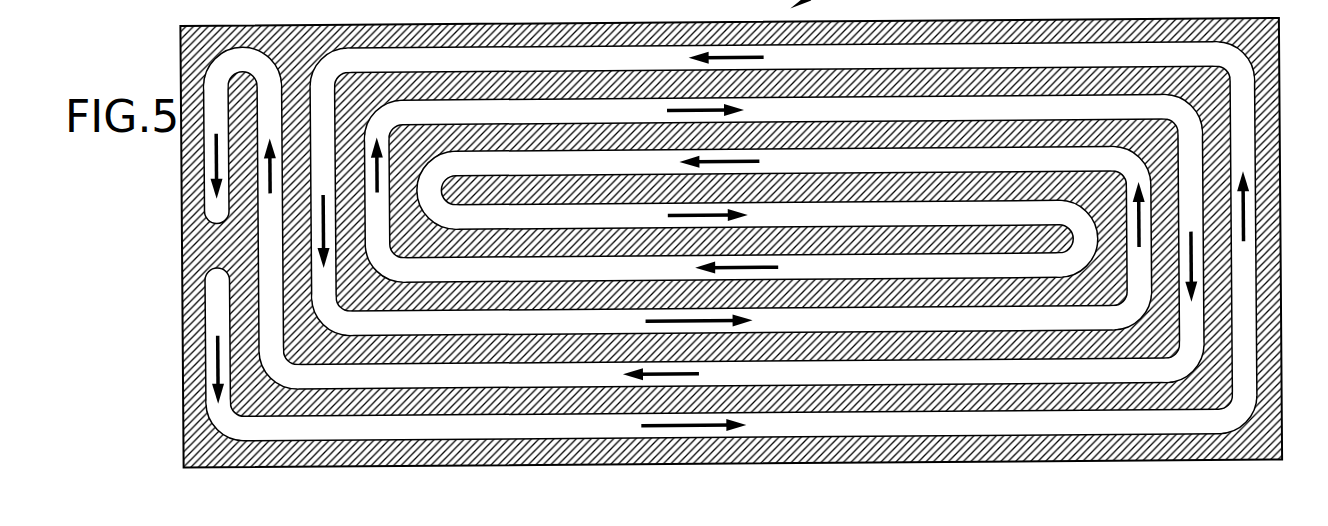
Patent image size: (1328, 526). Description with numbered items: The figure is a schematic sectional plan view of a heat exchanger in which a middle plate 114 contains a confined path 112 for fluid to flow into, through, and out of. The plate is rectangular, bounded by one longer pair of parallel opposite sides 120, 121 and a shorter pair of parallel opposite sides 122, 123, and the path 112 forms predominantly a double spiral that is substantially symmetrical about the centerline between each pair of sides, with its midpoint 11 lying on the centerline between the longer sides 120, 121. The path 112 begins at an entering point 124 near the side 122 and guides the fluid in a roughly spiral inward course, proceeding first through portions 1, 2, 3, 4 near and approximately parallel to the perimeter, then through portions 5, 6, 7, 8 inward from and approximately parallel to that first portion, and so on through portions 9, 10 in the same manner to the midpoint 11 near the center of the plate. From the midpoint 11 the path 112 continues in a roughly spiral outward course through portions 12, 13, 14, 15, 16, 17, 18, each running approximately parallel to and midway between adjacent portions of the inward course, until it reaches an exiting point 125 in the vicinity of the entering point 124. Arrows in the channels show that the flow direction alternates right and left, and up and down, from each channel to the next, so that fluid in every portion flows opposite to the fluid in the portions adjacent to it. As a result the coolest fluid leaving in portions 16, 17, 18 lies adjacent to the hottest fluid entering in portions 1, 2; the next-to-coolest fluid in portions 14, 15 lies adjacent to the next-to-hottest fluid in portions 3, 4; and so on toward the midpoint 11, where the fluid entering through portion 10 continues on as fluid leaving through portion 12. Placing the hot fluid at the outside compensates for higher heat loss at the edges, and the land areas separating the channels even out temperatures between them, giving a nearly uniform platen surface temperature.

The first portion of the path 1 is at (218, 342).
The second portion of the path 2 is at (731, 424).
The third portion of the path 3 is at (1244, 238).
The fourth portion of the path 4 is at (782, 56).
The fifth portion of the path 5 is at (323, 191).
The sixth portion of the path 6 is at (732, 320).
The seventh portion of the path 7 is at (1140, 237).
The eighth portion of the path 8 is at (784, 161).
The ninth portion of the path 9 is at (439, 191).
The tenth portion of the path 10 is at (757, 215).
The midpoint 11 is at (1080, 238).
The twelfth portion of the path 12 is at (732, 268).
The thirteenth portion of the path 13 is at (377, 190).
The fourteenth portion of the path 14 is at (783, 110).
The fifteenth portion of the path 15 is at (1193, 239).
The sixteenth portion of the path 16 is at (731, 374).
The seventeenth portion of the path 17 is at (274, 218).
The eighteenth portion of the path 18 is at (216, 148).
The confined path 112 is at (1246, 387).
The middle plate 114 is at (600, 26).
The side 120 is at (355, 24).
The side 121 is at (220, 466).
The side 122 is at (180, 425).
The side 123 is at (1283, 322).
The entering point 124 is at (220, 283).
The exiting point 125 is at (216, 211).